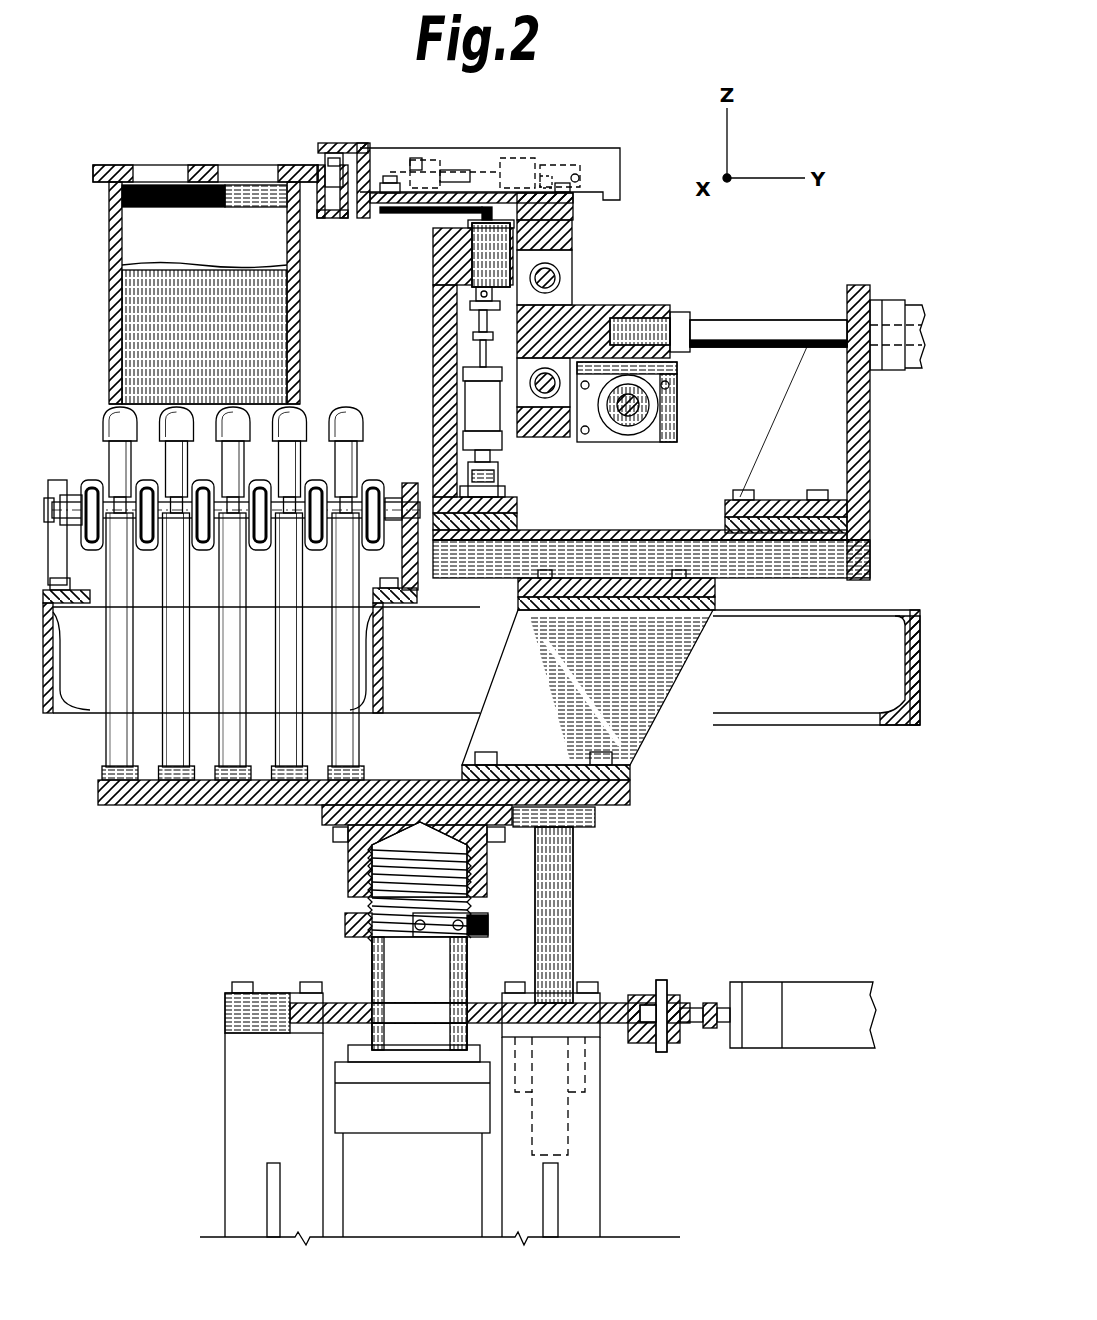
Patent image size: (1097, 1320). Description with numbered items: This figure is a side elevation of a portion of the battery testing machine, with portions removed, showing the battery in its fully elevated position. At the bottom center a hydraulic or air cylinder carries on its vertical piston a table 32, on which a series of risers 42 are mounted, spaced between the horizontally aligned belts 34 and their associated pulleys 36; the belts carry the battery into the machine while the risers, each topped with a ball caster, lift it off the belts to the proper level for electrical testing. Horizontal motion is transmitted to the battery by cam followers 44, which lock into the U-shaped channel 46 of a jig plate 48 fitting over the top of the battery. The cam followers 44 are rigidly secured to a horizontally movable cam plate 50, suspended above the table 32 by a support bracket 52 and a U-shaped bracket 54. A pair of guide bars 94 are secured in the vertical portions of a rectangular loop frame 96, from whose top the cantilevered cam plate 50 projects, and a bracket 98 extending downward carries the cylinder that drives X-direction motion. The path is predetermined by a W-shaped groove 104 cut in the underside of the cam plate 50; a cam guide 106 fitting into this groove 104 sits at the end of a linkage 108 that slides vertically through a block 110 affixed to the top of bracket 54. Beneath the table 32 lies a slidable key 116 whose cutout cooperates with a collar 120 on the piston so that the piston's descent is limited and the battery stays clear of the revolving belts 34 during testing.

The table 32 is at (213, 805).
The belts 34 is at (92, 482).
The pulleys 36 is at (406, 490).
The risers 42 is at (342, 408).
The cam followers 44 is at (322, 152).
The U-shaped channel 46 is at (330, 220).
The jig plate 48 is at (213, 178).
The cam plate 50 is at (372, 205).
The support bracket 52 is at (640, 736).
The U-shaped bracket 54 is at (440, 410).
The guide bars 94 is at (558, 279).
The frame 96 is at (574, 220).
The bracket 98 is at (672, 410).
The groove 104 is at (428, 212).
The cam guide 106 is at (484, 255).
The linkage 108 is at (472, 378).
The block 110 is at (478, 296).
The slidable key 116 is at (606, 1003).
The collar 120 is at (490, 928).